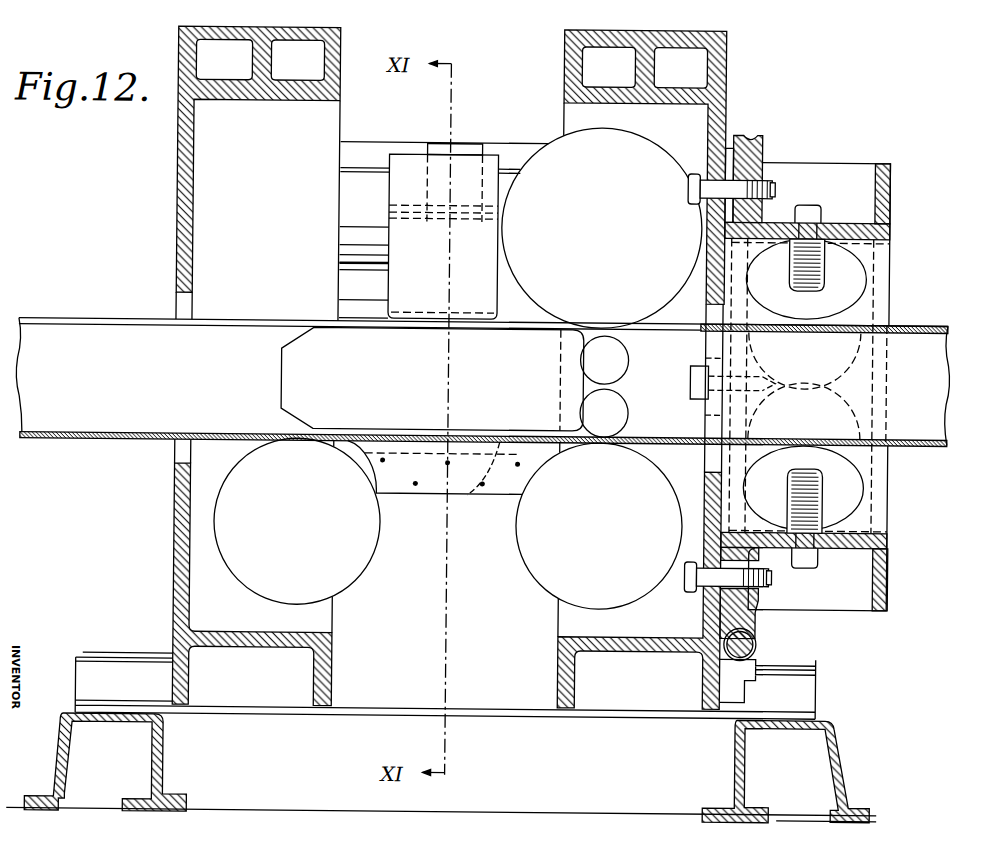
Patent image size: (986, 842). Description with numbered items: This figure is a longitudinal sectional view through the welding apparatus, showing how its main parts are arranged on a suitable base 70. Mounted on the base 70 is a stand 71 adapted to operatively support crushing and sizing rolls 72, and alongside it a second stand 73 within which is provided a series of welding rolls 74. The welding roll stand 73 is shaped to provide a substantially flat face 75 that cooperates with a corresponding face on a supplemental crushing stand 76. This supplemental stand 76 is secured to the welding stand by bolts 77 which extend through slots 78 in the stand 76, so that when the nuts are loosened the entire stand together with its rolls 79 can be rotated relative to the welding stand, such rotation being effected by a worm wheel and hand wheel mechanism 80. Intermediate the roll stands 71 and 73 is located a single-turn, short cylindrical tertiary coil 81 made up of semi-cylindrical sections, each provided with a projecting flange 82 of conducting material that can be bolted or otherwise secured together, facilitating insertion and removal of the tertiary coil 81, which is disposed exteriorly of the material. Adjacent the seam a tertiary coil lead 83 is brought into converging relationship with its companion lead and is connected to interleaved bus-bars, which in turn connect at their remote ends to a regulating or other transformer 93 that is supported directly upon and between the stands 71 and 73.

The base 70 is at (166, 763).
The stand 71 is at (176, 567).
The crushing and sizing rolls 72 is at (350, 555).
The second stand 73 is at (706, 610).
The welding rolls 74 is at (543, 560).
The flat face 75 is at (727, 466).
The supplemental crushing stand 76 is at (886, 548).
The bolts 77 is at (772, 188).
The slots 78 is at (760, 145).
The rolls 79 is at (843, 283).
The worm wheel and hand wheel mechanism 80 is at (758, 644).
The tertiary coil 81 is at (418, 314).
The projecting flange 82 is at (409, 494).
The tertiary coil lead 83 is at (476, 256).
The transformer 93 is at (359, 184).